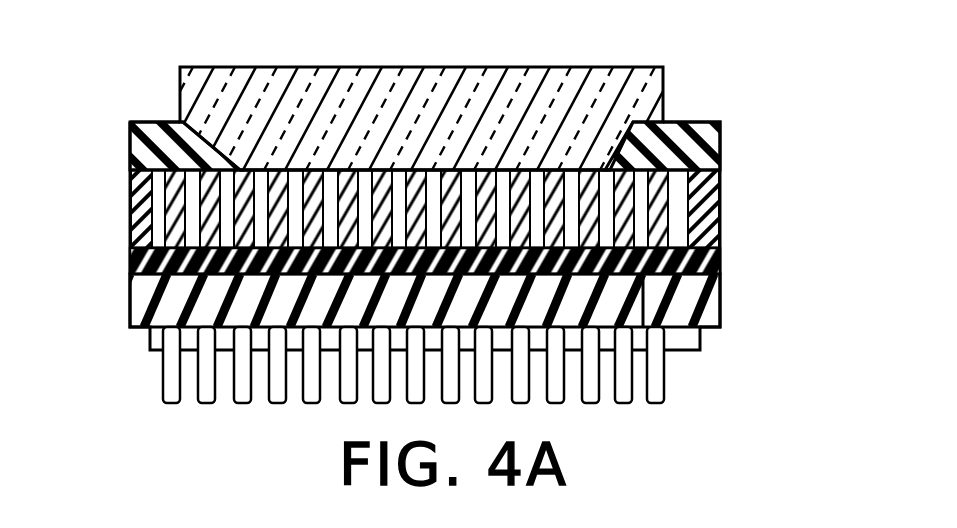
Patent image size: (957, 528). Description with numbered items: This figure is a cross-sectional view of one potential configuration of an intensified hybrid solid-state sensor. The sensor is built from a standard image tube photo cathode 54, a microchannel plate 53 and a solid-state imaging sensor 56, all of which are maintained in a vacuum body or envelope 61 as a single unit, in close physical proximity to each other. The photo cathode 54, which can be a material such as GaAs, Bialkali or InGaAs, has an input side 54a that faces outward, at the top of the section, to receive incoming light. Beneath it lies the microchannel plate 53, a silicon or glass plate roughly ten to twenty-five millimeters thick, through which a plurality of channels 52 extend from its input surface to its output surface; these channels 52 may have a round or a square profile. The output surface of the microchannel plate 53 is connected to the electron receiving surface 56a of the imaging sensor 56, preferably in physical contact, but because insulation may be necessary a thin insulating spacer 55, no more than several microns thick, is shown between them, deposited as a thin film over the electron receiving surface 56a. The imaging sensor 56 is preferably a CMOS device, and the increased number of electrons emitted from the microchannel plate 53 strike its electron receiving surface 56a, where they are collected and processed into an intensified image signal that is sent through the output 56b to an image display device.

The channels 52 is at (131, 212).
The microchannel plate 53 is at (720, 213).
The photo cathode 54 is at (474, 67).
The input side 54a is at (425, 146).
The insulating spacer 55 is at (389, 275).
The solid-state imaging sensor 56 is at (467, 392).
The electron receiving surface 56a is at (642, 340).
The output 56b is at (270, 404).
The vacuum body 61 is at (720, 150).